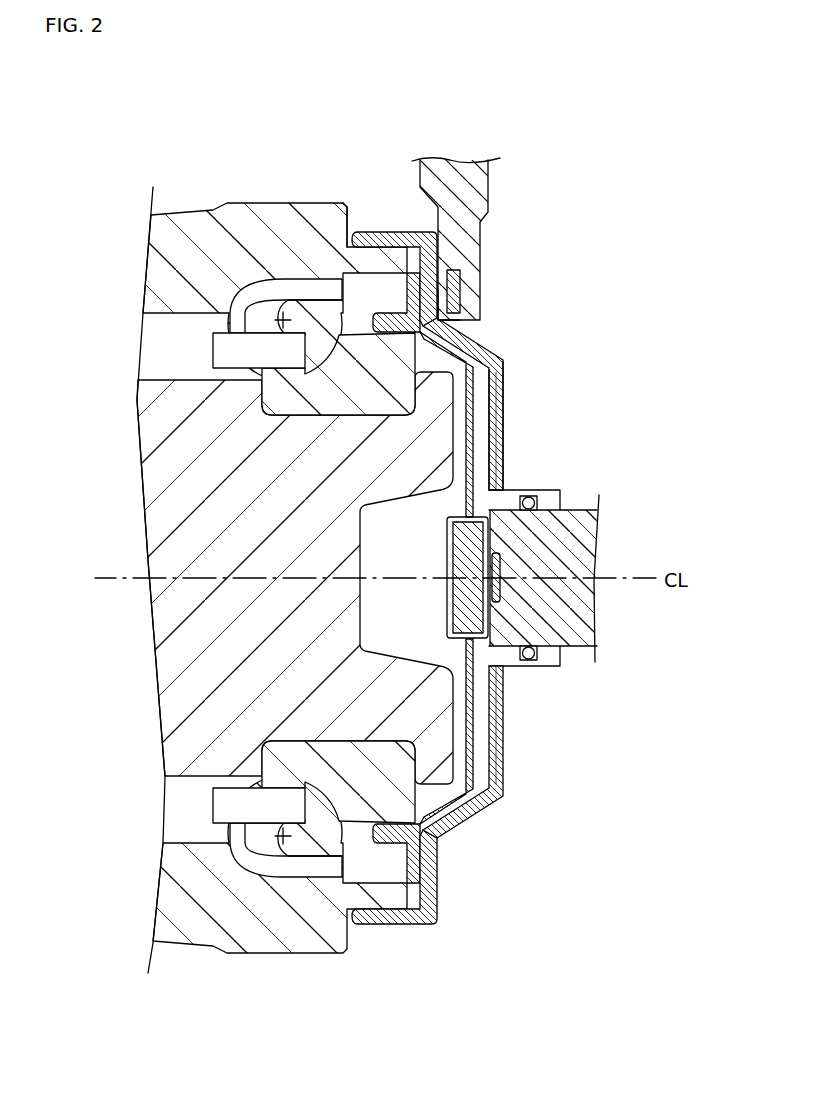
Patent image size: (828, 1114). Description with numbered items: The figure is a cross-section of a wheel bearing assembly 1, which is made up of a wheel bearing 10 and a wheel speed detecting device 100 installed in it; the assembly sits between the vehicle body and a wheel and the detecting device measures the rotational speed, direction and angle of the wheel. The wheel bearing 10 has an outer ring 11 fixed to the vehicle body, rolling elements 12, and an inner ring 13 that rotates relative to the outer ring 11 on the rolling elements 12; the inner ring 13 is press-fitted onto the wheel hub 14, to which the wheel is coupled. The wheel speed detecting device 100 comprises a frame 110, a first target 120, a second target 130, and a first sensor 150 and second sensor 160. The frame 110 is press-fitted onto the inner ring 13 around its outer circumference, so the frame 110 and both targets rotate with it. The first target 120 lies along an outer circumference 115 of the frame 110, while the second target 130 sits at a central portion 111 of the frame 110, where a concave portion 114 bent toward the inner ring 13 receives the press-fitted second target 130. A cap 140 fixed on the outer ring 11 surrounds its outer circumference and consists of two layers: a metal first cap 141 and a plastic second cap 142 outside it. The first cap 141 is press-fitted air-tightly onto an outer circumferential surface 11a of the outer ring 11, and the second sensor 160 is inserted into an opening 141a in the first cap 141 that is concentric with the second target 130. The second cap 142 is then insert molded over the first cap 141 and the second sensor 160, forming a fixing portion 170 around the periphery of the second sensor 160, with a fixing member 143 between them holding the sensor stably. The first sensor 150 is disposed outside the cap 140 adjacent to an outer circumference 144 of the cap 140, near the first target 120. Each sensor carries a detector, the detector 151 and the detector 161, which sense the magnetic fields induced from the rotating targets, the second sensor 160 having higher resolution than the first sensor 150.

The wheel bearing assembly 1 is at (565, 121).
The wheel bearing 10 is at (140, 247).
The outer ring 11 is at (264, 210).
The outer circumferential surface 11a is at (338, 247).
The rolling elements 12 is at (283, 273).
The inner ring 13 is at (318, 396).
The wheel hub 14 is at (172, 517).
The wheel speed detecting device 100 is at (512, 788).
The frame 110 is at (484, 408).
The central portion 111 is at (474, 485).
The concave portion 114 is at (474, 745).
The outer circumference 115 is at (432, 307).
The first target 120 is at (418, 273).
The second target 130 is at (470, 640).
The cap 140 is at (643, 362).
The first cap 141 is at (490, 440).
The opening 141a is at (507, 490).
The second cap 142 is at (484, 465).
The fixing member 143 is at (545, 505).
The outer circumference 144 is at (430, 258).
The first sensor 150 is at (493, 248).
The detector 151 is at (458, 288).
The second sensor 160 is at (572, 553).
The detector 161 is at (500, 588).
The fixing portion 170 is at (556, 658).